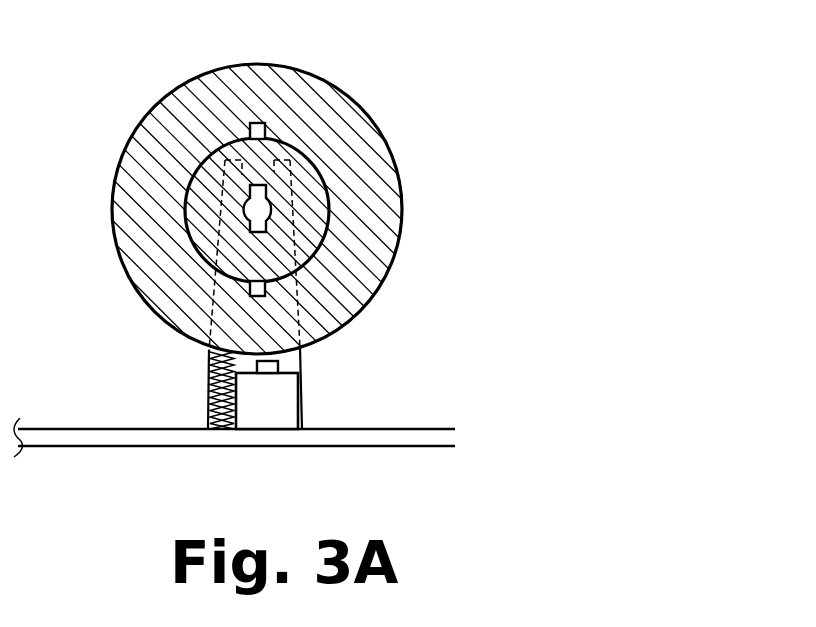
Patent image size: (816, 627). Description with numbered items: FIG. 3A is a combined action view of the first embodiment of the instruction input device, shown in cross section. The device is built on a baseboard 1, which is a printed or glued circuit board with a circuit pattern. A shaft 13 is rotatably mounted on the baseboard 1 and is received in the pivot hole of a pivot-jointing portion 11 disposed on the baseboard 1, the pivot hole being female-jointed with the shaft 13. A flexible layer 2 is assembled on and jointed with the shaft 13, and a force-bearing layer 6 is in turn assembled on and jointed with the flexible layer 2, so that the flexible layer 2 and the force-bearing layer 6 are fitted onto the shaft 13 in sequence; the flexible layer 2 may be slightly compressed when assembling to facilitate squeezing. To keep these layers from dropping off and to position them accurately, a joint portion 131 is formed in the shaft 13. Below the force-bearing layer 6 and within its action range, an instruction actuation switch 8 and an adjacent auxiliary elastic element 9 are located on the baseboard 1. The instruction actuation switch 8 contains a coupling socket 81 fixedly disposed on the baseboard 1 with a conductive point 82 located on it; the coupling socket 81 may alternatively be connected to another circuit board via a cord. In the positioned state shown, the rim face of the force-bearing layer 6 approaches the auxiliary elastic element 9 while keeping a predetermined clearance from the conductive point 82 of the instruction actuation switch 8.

The baseboard 1 is at (85, 440).
The flexible layer 2 is at (200, 197).
The force-bearing layer 6 is at (271, 84).
The instruction actuation switch 8 is at (312, 409).
The auxiliary elastic element 9 is at (207, 388).
The pivot-jointing portion 11 is at (264, 364).
The shaft 13 is at (258, 208).
The coupling socket 81 is at (271, 413).
The conductive point 82 is at (265, 360).
The joint portion 131 is at (267, 182).